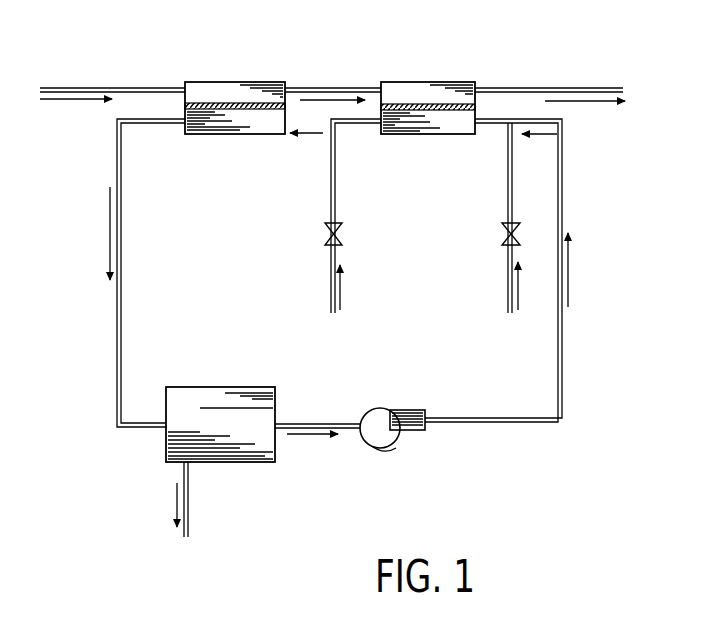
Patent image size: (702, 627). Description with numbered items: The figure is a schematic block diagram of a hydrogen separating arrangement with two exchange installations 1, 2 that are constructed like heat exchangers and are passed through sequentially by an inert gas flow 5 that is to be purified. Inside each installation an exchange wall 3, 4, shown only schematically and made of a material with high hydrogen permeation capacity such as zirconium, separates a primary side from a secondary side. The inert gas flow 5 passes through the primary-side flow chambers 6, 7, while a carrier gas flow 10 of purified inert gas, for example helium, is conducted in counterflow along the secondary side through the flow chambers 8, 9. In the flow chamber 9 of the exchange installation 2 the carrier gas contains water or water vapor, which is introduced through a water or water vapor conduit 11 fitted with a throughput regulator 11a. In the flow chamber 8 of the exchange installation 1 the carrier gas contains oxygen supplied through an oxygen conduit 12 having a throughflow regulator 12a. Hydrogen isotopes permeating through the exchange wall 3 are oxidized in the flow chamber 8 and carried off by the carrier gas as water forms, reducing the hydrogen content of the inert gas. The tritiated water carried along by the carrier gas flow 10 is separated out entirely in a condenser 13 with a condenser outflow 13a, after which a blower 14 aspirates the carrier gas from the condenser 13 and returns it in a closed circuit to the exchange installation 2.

The exchange installation 1 is at (203, 82).
The exchange installation 2 is at (443, 82).
The exchange wall 3 is at (230, 106).
The exchange wall 4 is at (418, 107).
The inert gas flow 5 is at (140, 91).
The flow chamber 6 is at (267, 90).
The flow chamber 7 is at (392, 92).
The flow chamber 8 is at (226, 123).
The flow chamber 9 is at (428, 125).
The carrier gas flow 10 is at (122, 317).
The water or water vapor conduit 11 is at (508, 178).
The throughput regulator 11a is at (505, 240).
The oxygen conduit 12 is at (333, 178).
The throughflow regulator 12a is at (328, 242).
The condenser 13 is at (207, 408).
The condenser outflow 13a is at (187, 503).
The blower 14 is at (383, 420).